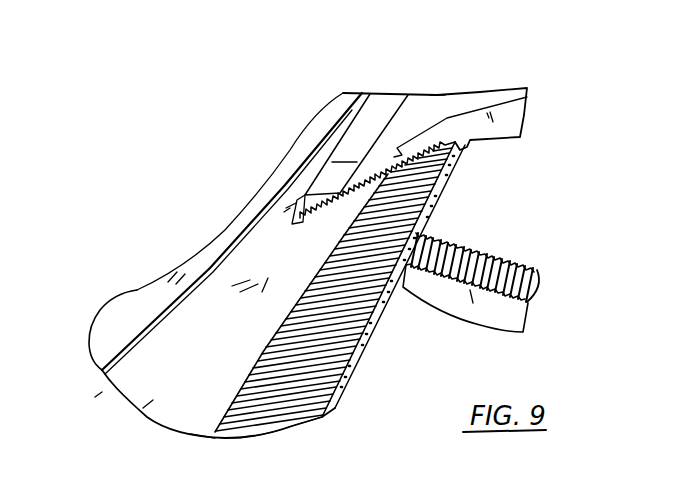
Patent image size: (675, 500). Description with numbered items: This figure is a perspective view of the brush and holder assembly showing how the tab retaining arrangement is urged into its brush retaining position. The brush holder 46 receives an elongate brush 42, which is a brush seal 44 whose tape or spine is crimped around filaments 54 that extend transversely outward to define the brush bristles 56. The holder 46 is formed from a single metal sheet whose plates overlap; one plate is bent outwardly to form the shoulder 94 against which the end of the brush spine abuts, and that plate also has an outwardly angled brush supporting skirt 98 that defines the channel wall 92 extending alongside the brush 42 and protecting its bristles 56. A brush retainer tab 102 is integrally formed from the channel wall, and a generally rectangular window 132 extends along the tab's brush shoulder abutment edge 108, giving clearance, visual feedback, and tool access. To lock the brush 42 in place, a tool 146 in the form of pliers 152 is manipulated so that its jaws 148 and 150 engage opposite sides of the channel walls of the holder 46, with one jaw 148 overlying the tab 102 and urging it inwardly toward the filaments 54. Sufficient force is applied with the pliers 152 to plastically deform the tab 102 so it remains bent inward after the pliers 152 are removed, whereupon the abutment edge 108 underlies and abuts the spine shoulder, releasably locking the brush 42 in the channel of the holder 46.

The brush holder 46 is at (92, 398).
The shoulder 94 is at (141, 298).
The tool 146 is at (552, 80).
The pliers 152 is at (438, 92).
The jaw 148 is at (333, 170).
The window 132 is at (288, 204).
The brush retainer tab 102 is at (281, 211).
The brush shoulder abutment edge 108 is at (292, 222).
The filaments 54 is at (452, 156).
The brush bristles 56 is at (283, 422).
The brush 42 is at (350, 398).
The brush seal 44 is at (378, 352).
The jaw 150 is at (412, 292).
The channel wall 92 is at (202, 417).
The brush supporting skirt 98 is at (147, 415).